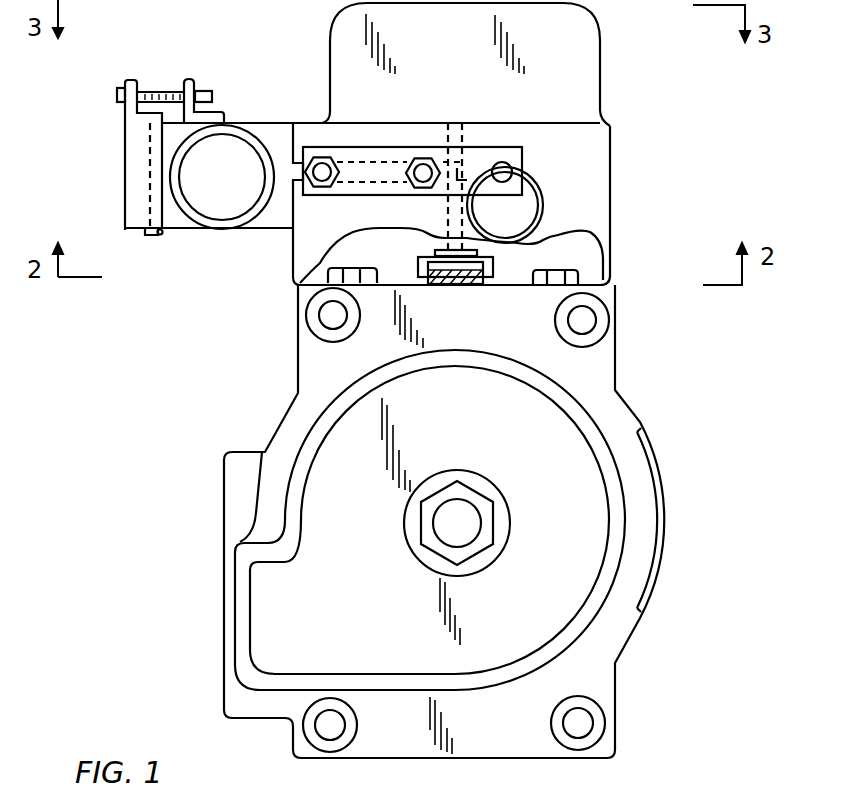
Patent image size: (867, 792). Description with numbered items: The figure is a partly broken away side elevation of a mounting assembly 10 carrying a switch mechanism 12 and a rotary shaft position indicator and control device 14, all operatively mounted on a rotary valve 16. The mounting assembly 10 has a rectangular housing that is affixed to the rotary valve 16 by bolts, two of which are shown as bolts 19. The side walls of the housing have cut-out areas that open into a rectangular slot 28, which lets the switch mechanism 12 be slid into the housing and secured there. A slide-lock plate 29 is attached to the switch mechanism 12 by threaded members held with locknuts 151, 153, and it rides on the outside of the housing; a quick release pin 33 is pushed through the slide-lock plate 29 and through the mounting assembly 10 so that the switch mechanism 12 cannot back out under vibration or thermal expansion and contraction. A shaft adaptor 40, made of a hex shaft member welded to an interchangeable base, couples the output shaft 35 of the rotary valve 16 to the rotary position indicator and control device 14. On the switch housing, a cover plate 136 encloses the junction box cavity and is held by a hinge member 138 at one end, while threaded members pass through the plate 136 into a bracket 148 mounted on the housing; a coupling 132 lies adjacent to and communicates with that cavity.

The mounting assembly 10 is at (635, 170).
The switch mechanism 12 is at (175, 159).
The rotary shaft position indicator and control device 14 is at (618, 32).
The rotary valve 16 is at (655, 410).
The bolts 19 is at (363, 268).
The rectangular slot 28 is at (378, 172).
The slide-lock plate 29 is at (481, 157).
The quick release pin 33 is at (506, 170).
The output shaft 35 is at (449, 290).
The shaft adaptor 40 is at (433, 232).
The coupling 132 is at (224, 205).
The plate 136 is at (125, 167).
The hinge member 138 is at (152, 235).
The bracket 148 is at (191, 78).
The locknut 151 is at (424, 166).
The locknut 153 is at (323, 165).